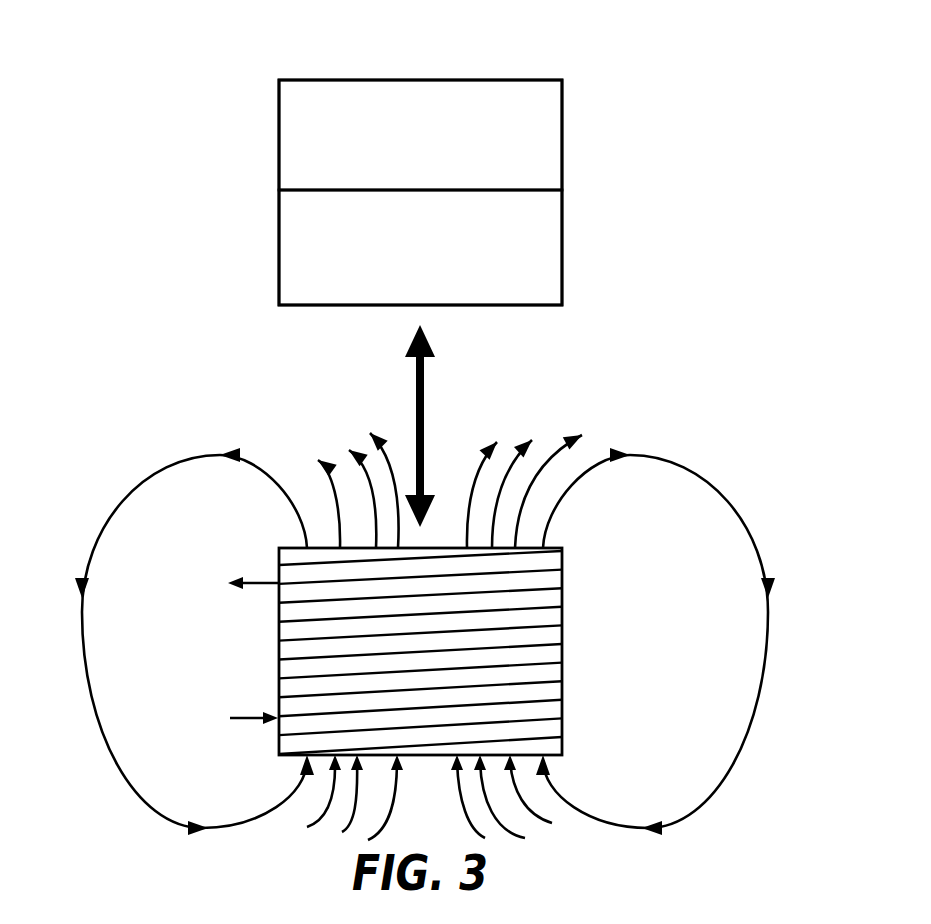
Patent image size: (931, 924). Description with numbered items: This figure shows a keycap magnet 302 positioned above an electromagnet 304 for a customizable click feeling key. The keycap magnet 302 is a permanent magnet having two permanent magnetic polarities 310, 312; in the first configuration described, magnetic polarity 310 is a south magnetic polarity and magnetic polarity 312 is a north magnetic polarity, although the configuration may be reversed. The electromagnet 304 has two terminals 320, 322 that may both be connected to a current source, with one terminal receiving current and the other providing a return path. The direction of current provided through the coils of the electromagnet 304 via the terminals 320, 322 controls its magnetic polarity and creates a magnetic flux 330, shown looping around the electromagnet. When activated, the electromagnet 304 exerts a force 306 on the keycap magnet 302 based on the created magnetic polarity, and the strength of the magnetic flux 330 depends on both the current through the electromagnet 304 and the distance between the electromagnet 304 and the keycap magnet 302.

The keycap magnet 302 is at (458, 160).
The electromagnet 304 is at (577, 655).
The force 306 is at (437, 424).
The magnetic polarity 310 is at (536, 136).
The magnetic polarity 312 is at (536, 248).
The terminal 320 is at (231, 589).
The terminal 322 is at (231, 719).
The magnetic flux 330 is at (132, 461).